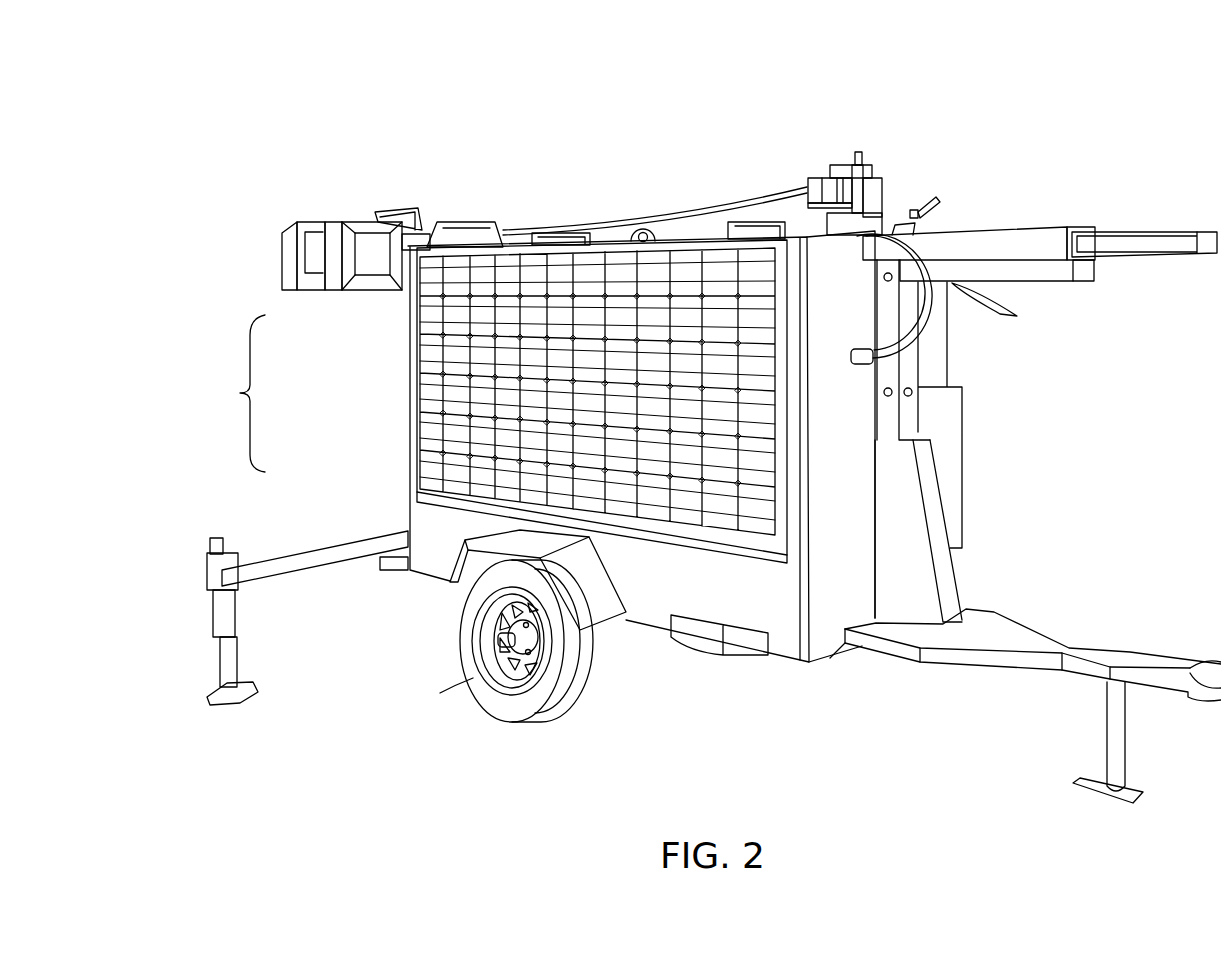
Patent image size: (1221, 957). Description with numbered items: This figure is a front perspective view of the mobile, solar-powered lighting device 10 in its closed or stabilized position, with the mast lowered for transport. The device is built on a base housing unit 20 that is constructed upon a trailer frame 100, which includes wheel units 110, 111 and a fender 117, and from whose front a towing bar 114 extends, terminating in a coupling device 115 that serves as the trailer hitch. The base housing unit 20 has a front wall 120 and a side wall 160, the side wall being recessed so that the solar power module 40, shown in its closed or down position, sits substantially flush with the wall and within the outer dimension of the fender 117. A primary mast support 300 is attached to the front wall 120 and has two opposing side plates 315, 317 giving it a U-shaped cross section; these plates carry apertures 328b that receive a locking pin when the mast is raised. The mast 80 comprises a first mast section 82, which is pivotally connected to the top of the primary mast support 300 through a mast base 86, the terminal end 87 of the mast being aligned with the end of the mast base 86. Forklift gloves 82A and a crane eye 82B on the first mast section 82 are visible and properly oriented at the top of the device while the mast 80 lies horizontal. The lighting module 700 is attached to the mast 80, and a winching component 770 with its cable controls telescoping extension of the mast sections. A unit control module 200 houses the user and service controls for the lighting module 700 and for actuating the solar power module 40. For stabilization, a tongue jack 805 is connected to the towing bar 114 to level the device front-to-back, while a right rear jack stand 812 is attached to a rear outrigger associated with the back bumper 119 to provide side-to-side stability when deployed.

The mobile, solar-powered lighting device 10 is at (286, 117).
The base housing unit 20 is at (235, 393).
The solar power module 40 is at (418, 462).
The mast 80 is at (1097, 199).
The first mast section 82 is at (980, 226).
The forklift gloves 82A is at (568, 232).
The crane eye 82B is at (642, 225).
The mast base 86 is at (978, 286).
The terminal end 87 is at (1080, 282).
The trailer frame 100 is at (770, 665).
The wheel unit 110 is at (700, 656).
The wheel unit 111 is at (468, 680).
The towing bar 114 is at (1035, 684).
The coupling device 115 is at (1162, 652).
The fender 117 is at (598, 606).
The back bumper 119 is at (400, 585).
The front wall 120 is at (842, 432).
The side wall 160 is at (724, 588).
The unit control module 200 is at (965, 452).
The primary mast support 300 is at (910, 375).
The side plate 315 is at (945, 577).
The side plate 317 is at (897, 529).
The apertures 328b is at (892, 396).
The lighting module 700 is at (397, 199).
The winching component 770 is at (842, 146).
The tongue jack 805 is at (1128, 736).
The right rear jack stand 812 is at (240, 652).